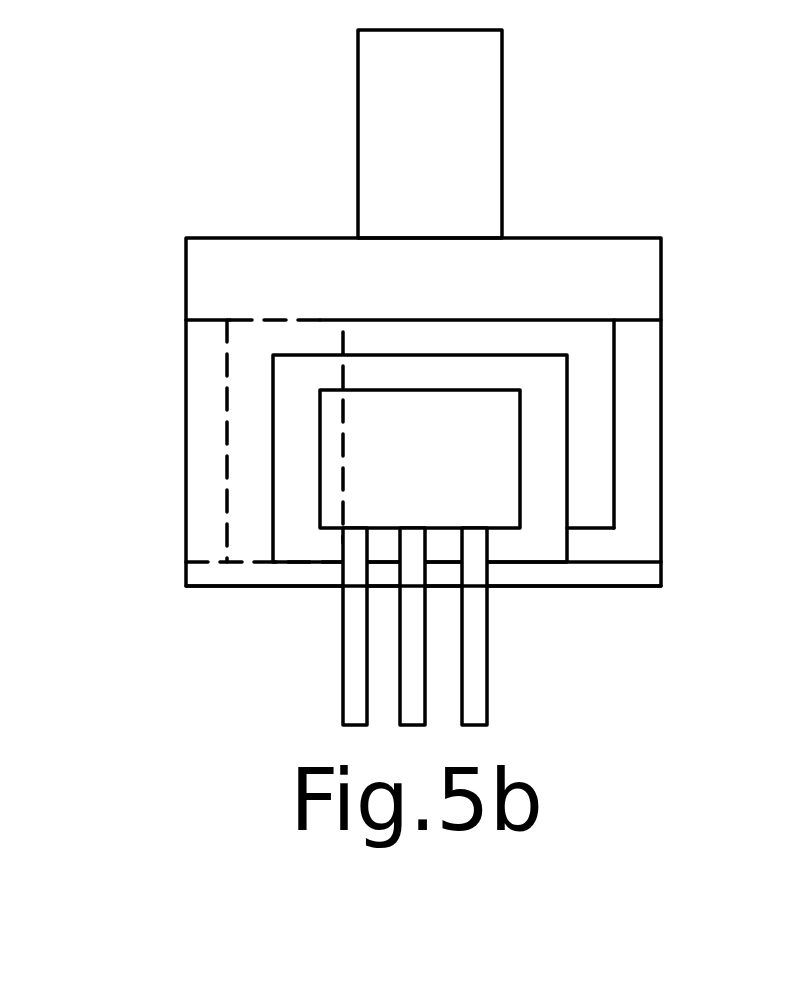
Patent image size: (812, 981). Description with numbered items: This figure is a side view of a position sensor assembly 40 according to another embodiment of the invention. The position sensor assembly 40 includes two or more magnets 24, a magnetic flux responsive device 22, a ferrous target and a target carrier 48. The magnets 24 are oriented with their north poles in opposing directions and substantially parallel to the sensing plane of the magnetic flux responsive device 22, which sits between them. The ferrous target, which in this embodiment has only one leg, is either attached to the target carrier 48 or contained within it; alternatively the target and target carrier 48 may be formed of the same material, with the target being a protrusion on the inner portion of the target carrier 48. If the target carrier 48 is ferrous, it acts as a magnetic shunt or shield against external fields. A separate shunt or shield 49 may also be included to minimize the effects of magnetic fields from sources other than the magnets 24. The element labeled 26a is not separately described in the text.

The position sensor assembly 40 is at (622, 128).
The target carrier 48 is at (615, 238).
The flux concentrator / pole piece 26a is at (226, 504).
The magnets 24 is at (614, 528).
The magnetic flux responsive device 22 is at (497, 532).
The shunt or shield 49 is at (630, 587).